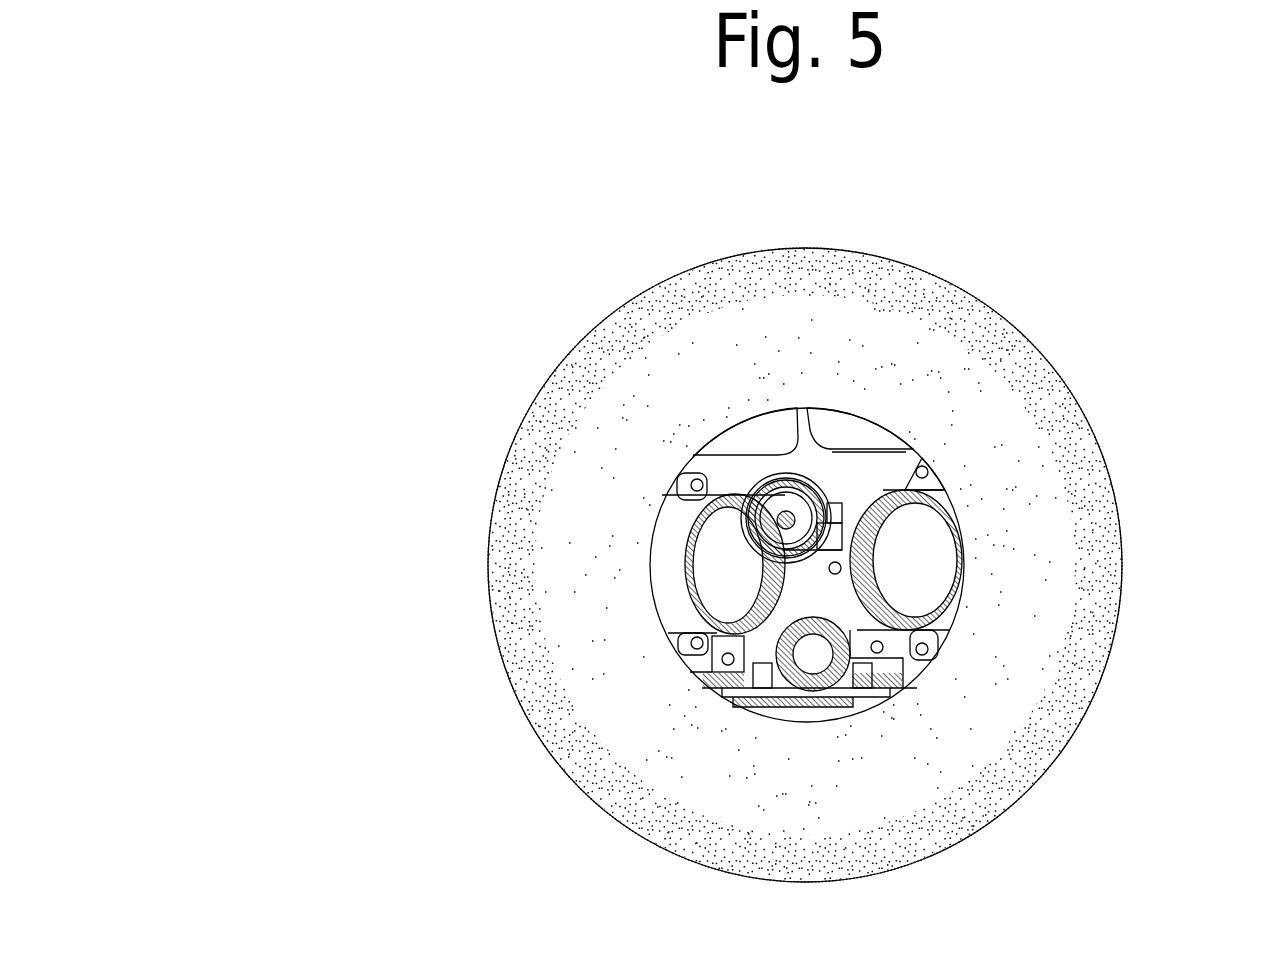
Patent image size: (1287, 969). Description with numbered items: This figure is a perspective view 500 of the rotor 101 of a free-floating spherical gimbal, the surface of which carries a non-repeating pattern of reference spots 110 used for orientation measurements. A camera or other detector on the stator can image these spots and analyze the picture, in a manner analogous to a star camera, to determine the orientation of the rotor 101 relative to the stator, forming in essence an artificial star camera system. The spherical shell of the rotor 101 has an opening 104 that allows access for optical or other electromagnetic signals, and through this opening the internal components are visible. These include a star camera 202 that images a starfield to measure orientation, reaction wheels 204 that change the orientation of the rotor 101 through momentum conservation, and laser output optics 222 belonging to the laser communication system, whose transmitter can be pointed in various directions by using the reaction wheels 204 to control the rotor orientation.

The end view of the assembly 500 is at (338, 147).
The rotor 101 is at (558, 363).
The insulating fill material 110 is at (593, 425).
The openings 104 is at (773, 407).
The reaction wheels 204 is at (797, 515).
The star camera 202 is at (722, 588).
The laser output optics 222 is at (818, 660).